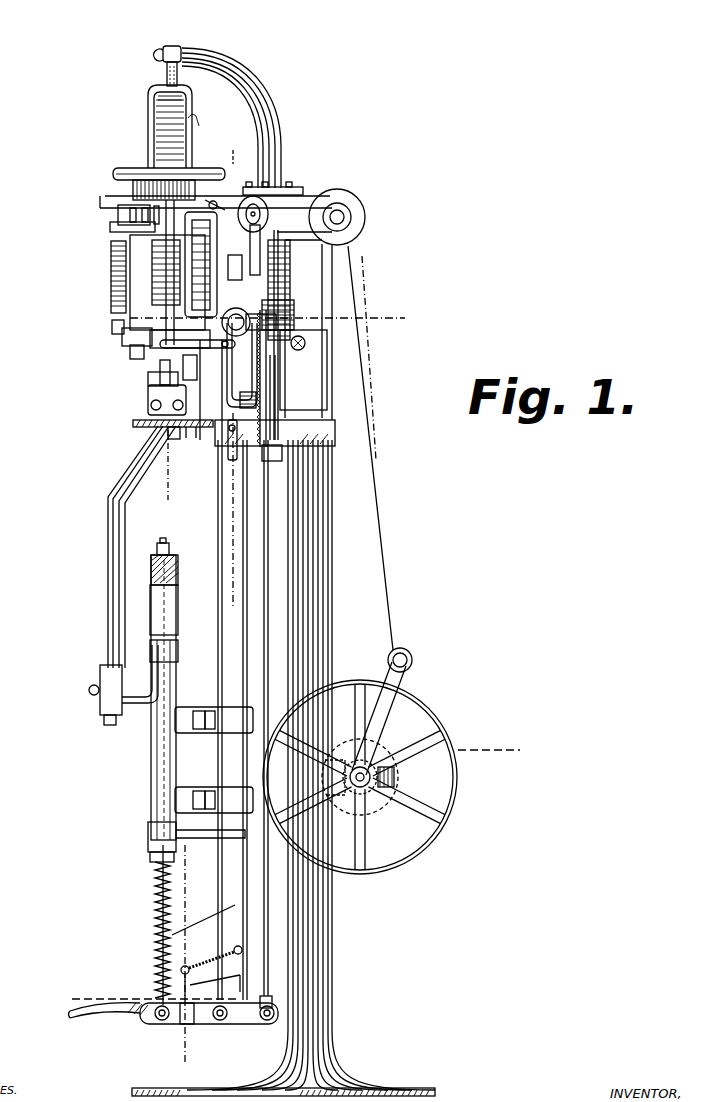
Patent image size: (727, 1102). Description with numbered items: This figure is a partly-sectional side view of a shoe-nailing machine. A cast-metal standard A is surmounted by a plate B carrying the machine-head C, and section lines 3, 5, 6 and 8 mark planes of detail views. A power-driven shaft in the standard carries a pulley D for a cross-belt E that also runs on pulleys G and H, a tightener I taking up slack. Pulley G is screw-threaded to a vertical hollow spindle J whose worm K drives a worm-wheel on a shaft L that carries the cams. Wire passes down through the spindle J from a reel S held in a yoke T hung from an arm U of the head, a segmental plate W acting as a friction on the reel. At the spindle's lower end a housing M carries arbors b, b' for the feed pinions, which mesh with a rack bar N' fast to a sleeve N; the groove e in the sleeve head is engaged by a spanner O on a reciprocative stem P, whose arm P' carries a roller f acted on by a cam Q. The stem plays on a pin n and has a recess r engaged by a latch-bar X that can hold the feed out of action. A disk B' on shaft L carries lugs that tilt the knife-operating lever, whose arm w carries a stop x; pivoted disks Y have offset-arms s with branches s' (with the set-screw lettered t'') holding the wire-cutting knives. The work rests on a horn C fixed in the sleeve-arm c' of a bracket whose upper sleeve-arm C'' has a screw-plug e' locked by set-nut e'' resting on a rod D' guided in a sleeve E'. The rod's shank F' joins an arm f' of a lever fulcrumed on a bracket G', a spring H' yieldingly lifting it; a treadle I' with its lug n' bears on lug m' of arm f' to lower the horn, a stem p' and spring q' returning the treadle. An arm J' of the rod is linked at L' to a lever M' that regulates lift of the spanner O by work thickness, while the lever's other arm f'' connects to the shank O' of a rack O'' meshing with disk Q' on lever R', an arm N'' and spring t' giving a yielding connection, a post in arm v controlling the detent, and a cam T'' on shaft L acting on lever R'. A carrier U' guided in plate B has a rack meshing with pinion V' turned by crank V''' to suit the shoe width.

The section line 8 8 is at (172, 44).
The arm of the machine-head U is at (242, 121).
The yoke T is at (183, 126).
The segmental sheet-metal plate W is at (170, 130).
The reel S is at (152, 106).
The section line 5 5 is at (225, 146).
The cross-belt E is at (265, 407).
The pulley G is at (145, 189).
The pulley H is at (340, 210).
The machine-head; horn C is at (220, 454).
The plate B is at (288, 433).
The recess r is at (128, 214).
The latch-bar X is at (110, 232).
The transverse pin n is at (149, 213).
The cam Q is at (108, 277).
The worm K is at (158, 250).
The vertical hollow spindle J is at (166, 272).
The disk B' is at (213, 264).
The stop x is at (213, 197).
The arm of lever w is at (220, 208).
The shaft L is at (239, 267).
The shank F' is at (207, 615).
The gear T'' is at (298, 335).
The disk Q' is at (293, 308).
The lever R' is at (236, 309).
The pinion V' is at (241, 322).
The section line 3 3 is at (398, 306).
The antifriction-roller f is at (96, 320).
The arm of stem P' is at (111, 336).
The reciprocative stem P is at (120, 349).
The lever M' is at (180, 330).
The annular groove e is at (197, 351).
The sleeve N is at (186, 368).
The disks Y is at (242, 365).
The spiral spring t' is at (254, 378).
The arm of machine-head v is at (303, 348).
The rack O'' is at (290, 397).
The spanner O is at (139, 379).
The vertical bar N' is at (140, 379).
The housing M is at (141, 400).
The transverse arbor b is at (153, 411).
The block t'' is at (248, 412).
The branch of offset-arm s' is at (163, 431).
The offset-arm s is at (169, 439).
The transverse arbor b' is at (191, 441).
The carrier U' is at (216, 448).
The crank V''' is at (209, 418).
The arm N'' is at (257, 467).
The standard A is at (330, 600).
The shank of rack O' is at (273, 730).
The adjustable link connection L' is at (218, 720).
The pulley D is at (373, 768).
The tightener I is at (411, 662).
The section line 6 6 is at (514, 738).
The lower vertical sleeve-arm c' is at (117, 686).
The vertical sleeve E' is at (148, 697).
The set-nut e'' is at (178, 547).
The screw-plug e' is at (174, 570).
The upper vertical sleeve-arm C'' is at (176, 610).
The rod D' is at (175, 651).
The arm of rod J' is at (196, 842).
The spiral spring H' is at (203, 924).
The stem p' is at (182, 959).
The spiral spring q' is at (227, 942).
The bracket G' is at (214, 972).
The link n' is at (196, 986).
The treadle I' is at (109, 999).
The arm of lever f' is at (209, 1028).
The lug m' is at (193, 1026).
The pivot f'' is at (239, 1029).